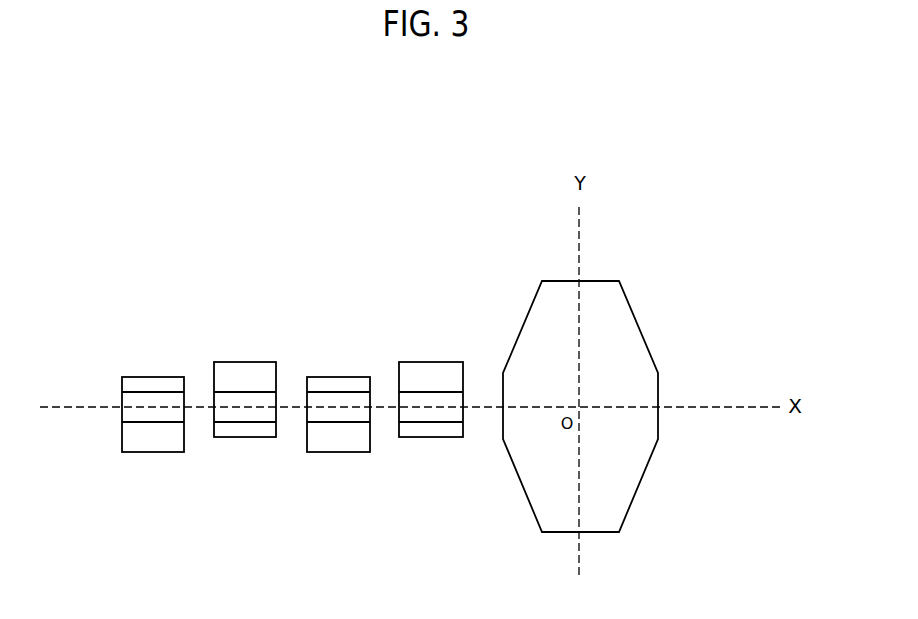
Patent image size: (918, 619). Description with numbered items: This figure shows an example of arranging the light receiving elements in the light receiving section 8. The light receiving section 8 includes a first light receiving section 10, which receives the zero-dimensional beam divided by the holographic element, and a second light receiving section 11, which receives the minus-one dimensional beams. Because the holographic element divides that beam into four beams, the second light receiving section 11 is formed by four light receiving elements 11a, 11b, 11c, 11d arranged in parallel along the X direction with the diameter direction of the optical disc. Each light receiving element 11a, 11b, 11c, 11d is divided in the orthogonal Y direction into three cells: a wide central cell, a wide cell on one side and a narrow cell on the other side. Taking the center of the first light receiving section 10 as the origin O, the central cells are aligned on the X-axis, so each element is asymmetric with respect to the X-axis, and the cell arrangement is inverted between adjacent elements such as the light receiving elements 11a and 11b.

The light receiving section 8 is at (195, 210).
The first light receiving section 10 is at (636, 318).
The second light receiving section 11 is at (140, 468).
The light receiving element 11a is at (436, 357).
The light receiving element 11b is at (344, 357).
The light receiving element 11c is at (242, 357).
The light receiving element 11d is at (148, 357).